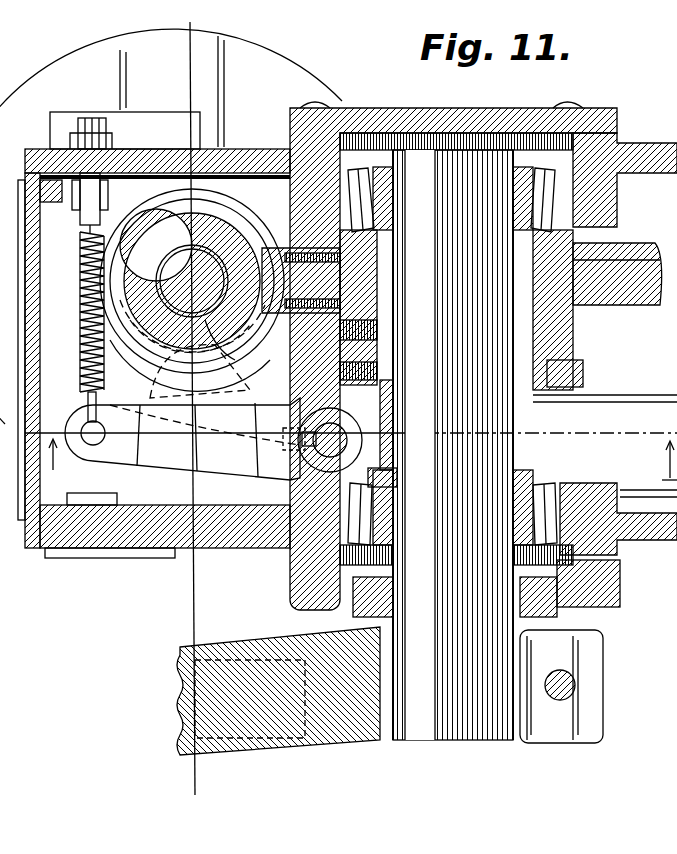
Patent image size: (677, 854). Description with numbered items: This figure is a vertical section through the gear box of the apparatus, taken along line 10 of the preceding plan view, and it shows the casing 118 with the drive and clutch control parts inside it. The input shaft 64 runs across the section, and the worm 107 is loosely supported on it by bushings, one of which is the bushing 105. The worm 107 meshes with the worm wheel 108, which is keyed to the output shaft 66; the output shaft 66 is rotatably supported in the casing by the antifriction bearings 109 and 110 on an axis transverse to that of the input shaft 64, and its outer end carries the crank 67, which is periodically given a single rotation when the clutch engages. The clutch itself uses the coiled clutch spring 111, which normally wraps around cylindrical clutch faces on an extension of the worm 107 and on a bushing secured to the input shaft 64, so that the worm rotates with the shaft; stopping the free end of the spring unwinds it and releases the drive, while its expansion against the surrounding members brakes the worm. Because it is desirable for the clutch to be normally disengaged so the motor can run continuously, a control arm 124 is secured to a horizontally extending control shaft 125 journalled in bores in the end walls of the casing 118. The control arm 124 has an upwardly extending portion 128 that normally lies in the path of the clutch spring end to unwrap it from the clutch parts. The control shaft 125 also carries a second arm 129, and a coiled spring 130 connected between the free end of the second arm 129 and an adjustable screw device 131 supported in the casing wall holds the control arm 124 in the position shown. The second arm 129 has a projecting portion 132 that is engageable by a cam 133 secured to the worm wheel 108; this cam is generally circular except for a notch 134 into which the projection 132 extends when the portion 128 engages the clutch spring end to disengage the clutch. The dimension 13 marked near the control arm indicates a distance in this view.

The axis reference line 10 is at (190, 52).
The offset distance 13 is at (55, 465).
The input shaft 64 is at (182, 262).
The output shaft 66 is at (485, 427).
The crank 67 is at (305, 735).
The bushing 105 is at (215, 330).
The worm 107 is at (228, 228).
The worm wheel 108 is at (625, 305).
The antifriction bearing 109 is at (575, 500).
The antifriction bearing 110 is at (585, 203).
The coiled clutch spring 111 is at (256, 345).
The casing 118 is at (188, 560).
The control arm 124 is at (208, 460).
The control shaft 125 is at (308, 465).
The upwardly extending portion 128 is at (186, 382).
The second arm 129 is at (150, 455).
The coiled spring 130 is at (78, 322).
The adjustable screw device 131 is at (104, 178).
The projecting portion 132 is at (345, 330).
The cam 133 is at (583, 372).
The notch 134 is at (345, 372).